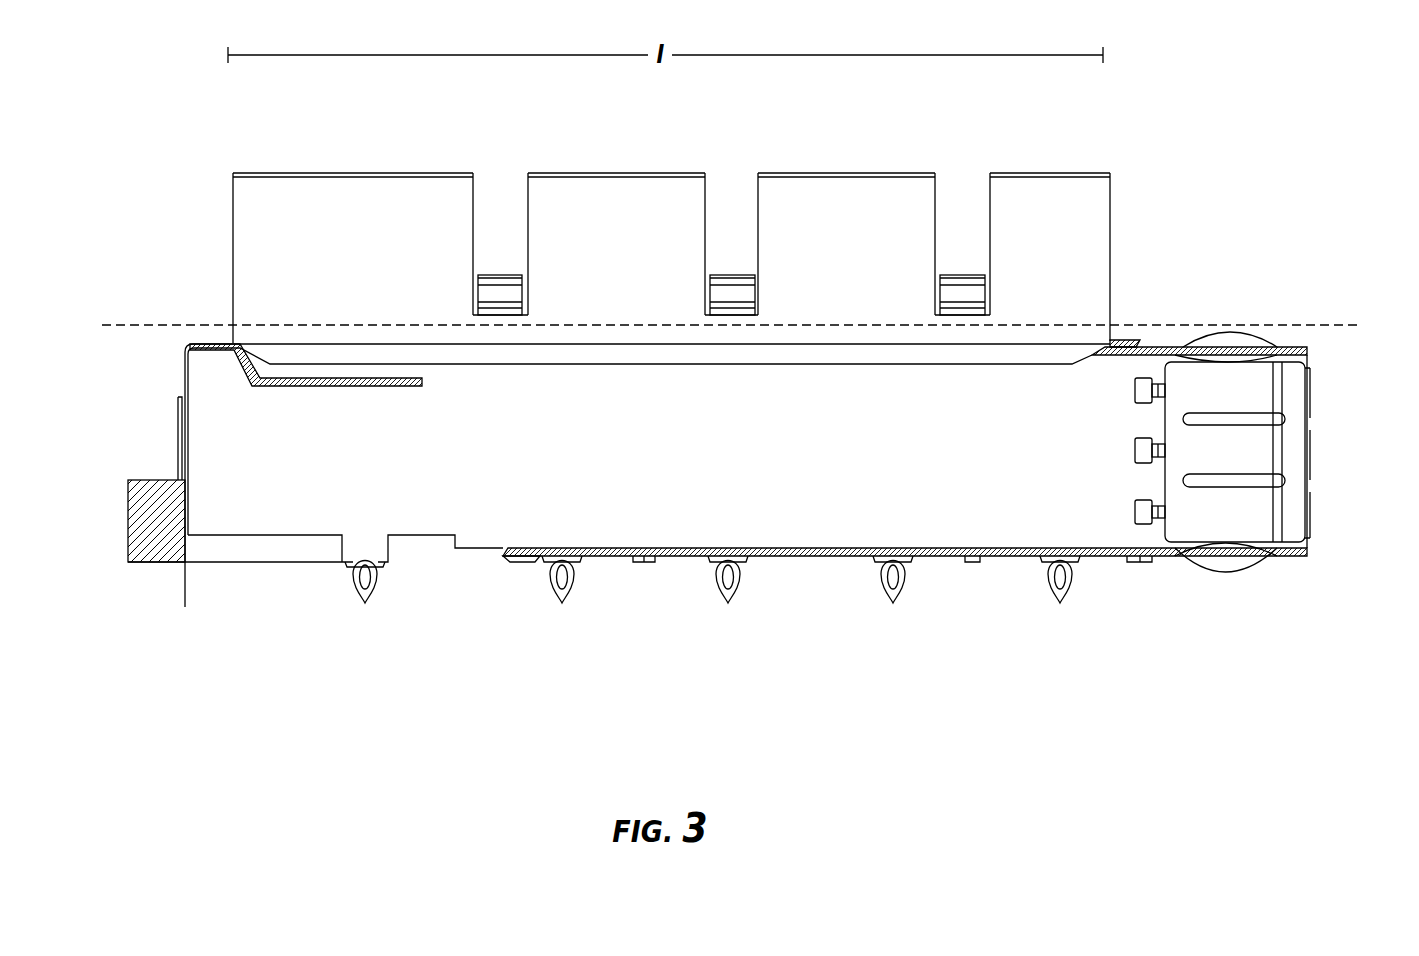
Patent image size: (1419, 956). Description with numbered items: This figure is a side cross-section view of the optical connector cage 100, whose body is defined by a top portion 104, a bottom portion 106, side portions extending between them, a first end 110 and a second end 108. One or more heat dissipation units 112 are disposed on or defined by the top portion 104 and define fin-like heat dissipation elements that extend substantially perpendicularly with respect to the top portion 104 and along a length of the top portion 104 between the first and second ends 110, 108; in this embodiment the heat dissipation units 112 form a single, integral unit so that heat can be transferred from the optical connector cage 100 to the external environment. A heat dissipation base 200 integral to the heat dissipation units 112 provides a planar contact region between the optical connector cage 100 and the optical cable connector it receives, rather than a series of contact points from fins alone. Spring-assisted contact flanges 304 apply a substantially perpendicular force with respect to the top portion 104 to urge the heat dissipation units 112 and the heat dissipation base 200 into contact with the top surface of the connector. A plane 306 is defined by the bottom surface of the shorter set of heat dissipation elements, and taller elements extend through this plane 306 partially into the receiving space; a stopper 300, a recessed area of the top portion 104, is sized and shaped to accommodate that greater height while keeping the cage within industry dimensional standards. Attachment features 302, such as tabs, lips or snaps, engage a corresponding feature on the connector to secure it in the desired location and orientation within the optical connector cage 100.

The optical connector cage 100 is at (175, 350).
The top portion 104 is at (1163, 340).
The bottom portion 106 is at (612, 555).
The second end 108 is at (177, 423).
The first end 110 is at (1308, 407).
The heat dissipation units 112 is at (405, 217).
The heat dissipation base 200 is at (1008, 362).
The stopper 300 is at (263, 388).
The attachment features 302 is at (1227, 452).
The spring-assisted contact flanges 304 is at (507, 295).
The plane 306 is at (112, 325).